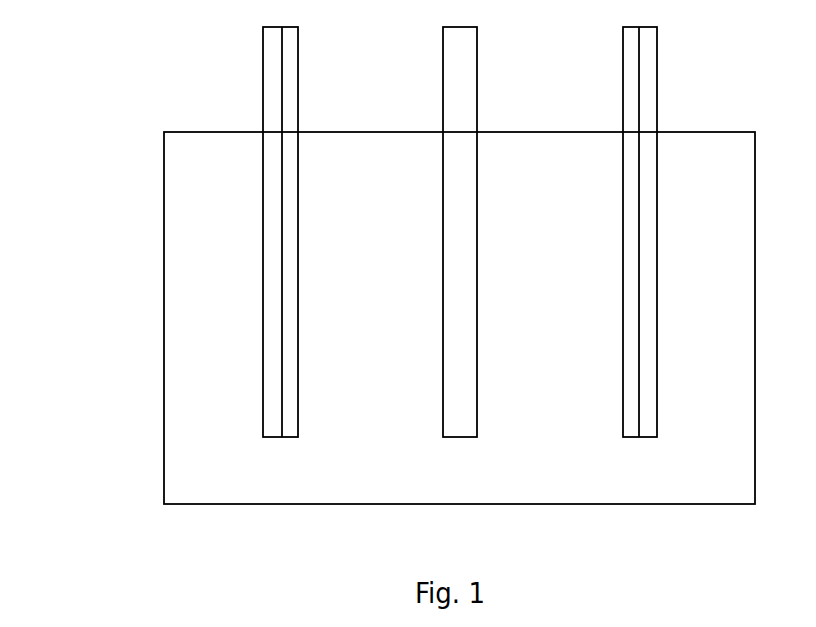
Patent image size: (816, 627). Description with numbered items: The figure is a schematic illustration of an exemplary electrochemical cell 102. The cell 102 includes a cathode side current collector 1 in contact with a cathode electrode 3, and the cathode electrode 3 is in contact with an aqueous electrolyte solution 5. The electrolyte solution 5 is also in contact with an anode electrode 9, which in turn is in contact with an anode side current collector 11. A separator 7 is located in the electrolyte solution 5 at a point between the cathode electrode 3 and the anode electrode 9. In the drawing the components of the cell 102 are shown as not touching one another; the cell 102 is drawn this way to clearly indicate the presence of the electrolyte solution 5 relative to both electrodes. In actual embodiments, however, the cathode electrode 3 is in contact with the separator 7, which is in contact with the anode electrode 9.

The electrochemical cell 102 is at (134, 237).
The cathode side current collector 1 is at (262, 222).
The cathode electrode 3 is at (281, 88).
The aqueous electrolyte solution 5 is at (363, 391).
The separator 7 is at (442, 84).
The anode electrode 9 is at (638, 88).
The anode side current collector 11 is at (658, 221).